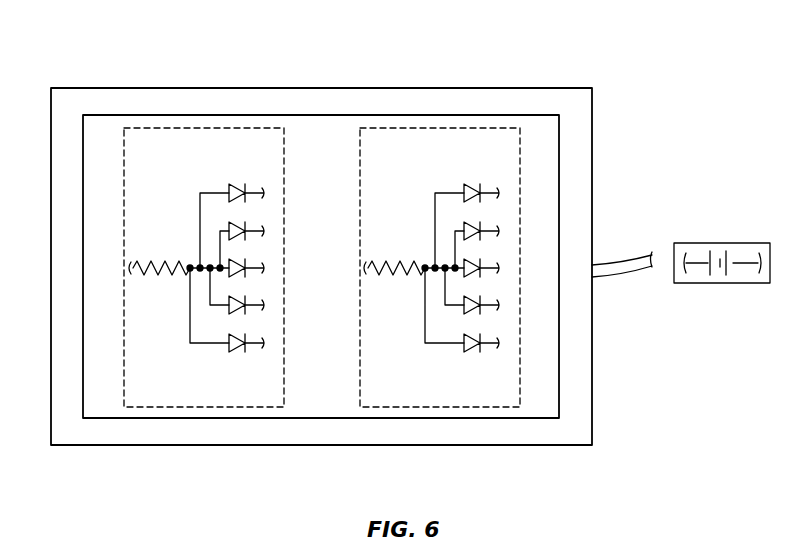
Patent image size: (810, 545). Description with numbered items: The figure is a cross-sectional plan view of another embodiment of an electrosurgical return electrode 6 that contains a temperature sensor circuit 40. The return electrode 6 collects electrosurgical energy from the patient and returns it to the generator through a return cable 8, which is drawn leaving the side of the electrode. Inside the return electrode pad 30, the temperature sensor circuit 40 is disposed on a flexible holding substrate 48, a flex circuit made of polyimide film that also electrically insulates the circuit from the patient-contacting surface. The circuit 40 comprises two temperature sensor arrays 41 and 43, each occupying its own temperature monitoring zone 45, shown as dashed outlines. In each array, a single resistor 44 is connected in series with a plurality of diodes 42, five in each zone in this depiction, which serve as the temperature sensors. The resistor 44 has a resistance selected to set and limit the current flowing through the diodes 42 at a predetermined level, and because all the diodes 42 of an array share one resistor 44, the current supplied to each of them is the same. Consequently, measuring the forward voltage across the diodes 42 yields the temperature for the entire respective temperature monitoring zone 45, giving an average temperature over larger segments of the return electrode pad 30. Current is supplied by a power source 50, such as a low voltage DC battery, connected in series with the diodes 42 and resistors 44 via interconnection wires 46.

The return electrode 6 is at (120, 45).
The return electrode pad 30 is at (433, 87).
The temperature sensor circuit 40 is at (332, 113).
The holding substrate 48 is at (484, 115).
The temperature sensor array 43 is at (521, 158).
The temperature sensor array 41 is at (123, 182).
The resistor 44 is at (159, 279).
The diode 42 is at (233, 183).
The interconnection wire 46 is at (258, 229).
The temperature monitoring zone 45 is at (218, 407).
The return cable 8 is at (620, 262).
The power source 50 is at (712, 243).